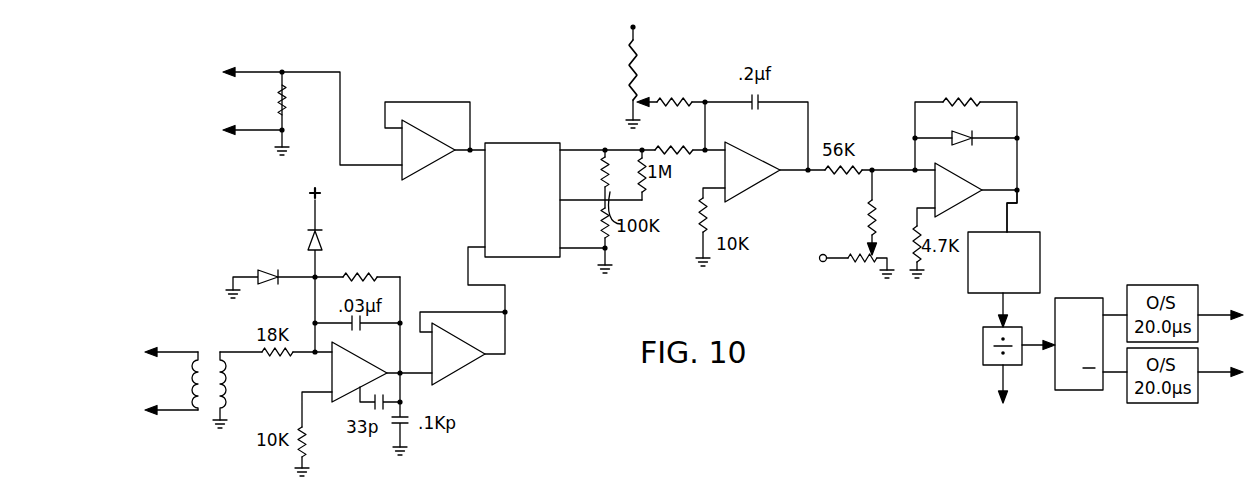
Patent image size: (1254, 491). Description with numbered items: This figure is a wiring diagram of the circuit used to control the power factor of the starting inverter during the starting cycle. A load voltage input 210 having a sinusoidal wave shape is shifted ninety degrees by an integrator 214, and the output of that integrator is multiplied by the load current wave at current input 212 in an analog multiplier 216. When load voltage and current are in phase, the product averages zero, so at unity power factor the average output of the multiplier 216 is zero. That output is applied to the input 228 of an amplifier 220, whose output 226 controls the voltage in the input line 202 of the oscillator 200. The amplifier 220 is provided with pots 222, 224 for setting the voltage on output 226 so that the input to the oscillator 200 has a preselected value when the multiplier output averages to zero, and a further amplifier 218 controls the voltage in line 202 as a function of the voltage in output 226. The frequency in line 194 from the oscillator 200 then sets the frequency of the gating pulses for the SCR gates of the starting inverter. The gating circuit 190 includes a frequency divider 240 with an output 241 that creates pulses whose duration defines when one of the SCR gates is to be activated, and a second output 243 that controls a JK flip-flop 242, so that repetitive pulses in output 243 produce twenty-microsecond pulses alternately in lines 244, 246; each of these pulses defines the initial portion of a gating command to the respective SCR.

The gating circuit 190 is at (1096, 171).
The output line 194 is at (1003, 308).
The oscillator 200 is at (968, 283).
The input line 202 is at (1007, 217).
The voltage input 210 is at (178, 415).
The current input 212 is at (303, 72).
The integrator 214 is at (376, 275).
The analog multiplier 216 is at (522, 143).
The further amplifier 218 is at (955, 102).
The amplifier 220 is at (753, 181).
The pot 222 is at (643, 88).
The pot 224 is at (877, 224).
The output 226 is at (890, 168).
The input 228 is at (700, 157).
The frequency divider 240 is at (983, 345).
The output 241 is at (1003, 373).
The JK flip-flop 242 is at (1070, 302).
The output 243 is at (1037, 347).
The line 244 is at (1215, 312).
The line 246 is at (1212, 378).